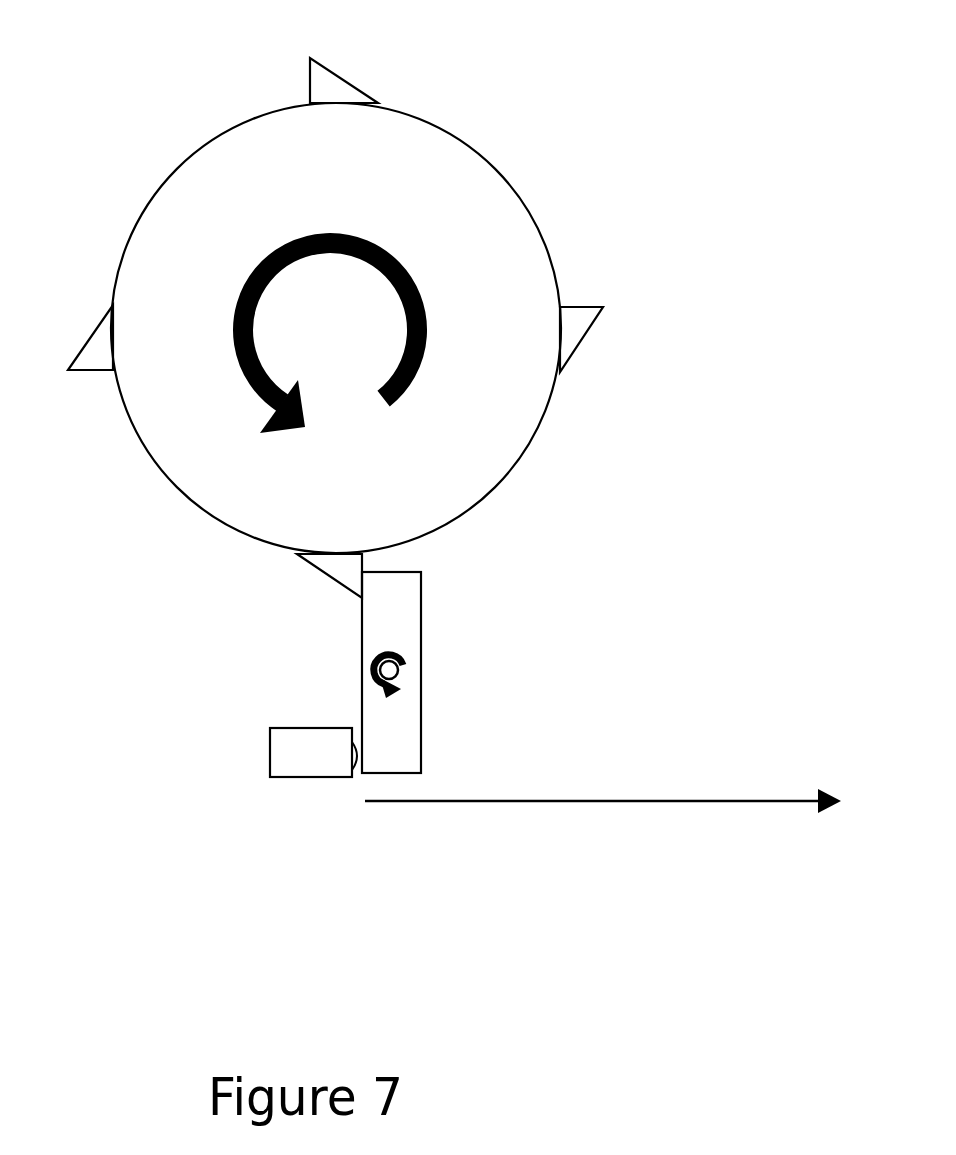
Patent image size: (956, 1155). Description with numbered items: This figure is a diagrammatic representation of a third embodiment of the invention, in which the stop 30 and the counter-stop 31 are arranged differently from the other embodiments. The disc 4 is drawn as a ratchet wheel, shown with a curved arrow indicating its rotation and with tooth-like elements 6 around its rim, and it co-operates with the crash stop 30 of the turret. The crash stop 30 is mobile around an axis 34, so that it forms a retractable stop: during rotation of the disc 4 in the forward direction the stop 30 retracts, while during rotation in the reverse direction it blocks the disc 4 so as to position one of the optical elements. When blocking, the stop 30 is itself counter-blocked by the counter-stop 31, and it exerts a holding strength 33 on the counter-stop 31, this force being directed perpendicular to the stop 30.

The disc 4 is at (518, 220).
The sensing elements 6 is at (268, 72).
The crash stop 30 is at (421, 727).
The counter-stop 31 is at (270, 762).
The holding strength 33 is at (610, 801).
The axis 34 is at (402, 652).